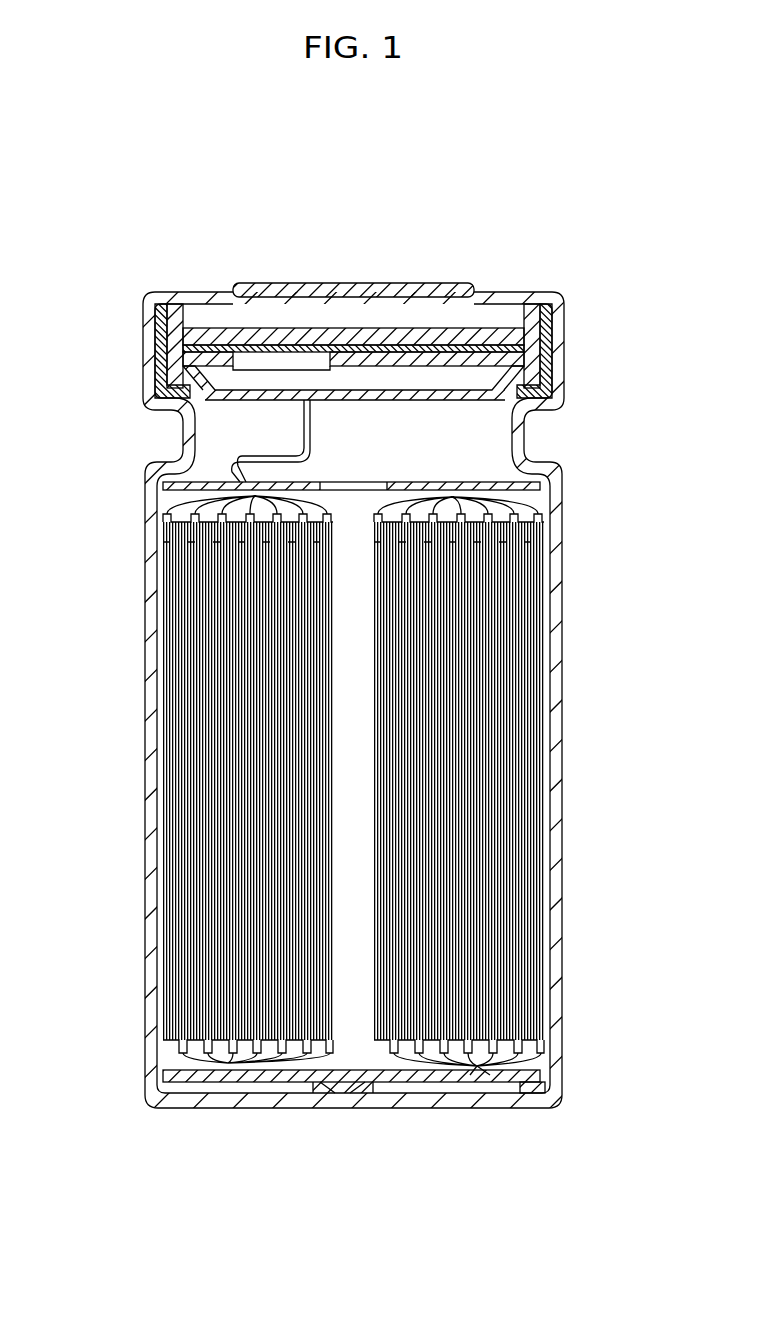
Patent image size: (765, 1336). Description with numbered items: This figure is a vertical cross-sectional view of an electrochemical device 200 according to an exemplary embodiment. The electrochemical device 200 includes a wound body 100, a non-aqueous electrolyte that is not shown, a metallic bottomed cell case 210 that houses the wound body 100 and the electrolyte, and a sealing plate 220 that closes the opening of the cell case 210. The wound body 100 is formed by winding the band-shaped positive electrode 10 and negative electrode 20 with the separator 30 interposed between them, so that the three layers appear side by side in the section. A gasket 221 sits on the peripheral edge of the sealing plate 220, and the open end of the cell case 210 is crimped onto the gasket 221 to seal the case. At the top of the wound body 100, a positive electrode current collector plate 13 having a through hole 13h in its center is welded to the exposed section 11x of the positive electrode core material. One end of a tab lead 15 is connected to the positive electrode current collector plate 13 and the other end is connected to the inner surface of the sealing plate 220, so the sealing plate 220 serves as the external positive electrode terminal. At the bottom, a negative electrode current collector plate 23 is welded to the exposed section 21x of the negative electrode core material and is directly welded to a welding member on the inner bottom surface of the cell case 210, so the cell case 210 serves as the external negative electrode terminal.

The electrochemical device 200 is at (128, 247).
The sealing plate 220 is at (336, 276).
The gasket 221 is at (550, 320).
The tab lead 15 is at (307, 441).
The positive electrode current collector plate 13 is at (431, 482).
The through hole 13h is at (352, 482).
The exposed section of positive electrode core material 11x is at (212, 506).
The wound body 100 is at (636, 513).
The positive electrode 10 is at (520, 546).
The separator 30 is at (520, 580).
The negative electrode 20 is at (520, 612).
The cell case 210 is at (150, 638).
The negative electrode current collector plate 23 is at (398, 1085).
The exposed section of negative electrode core material 21x is at (517, 1083).